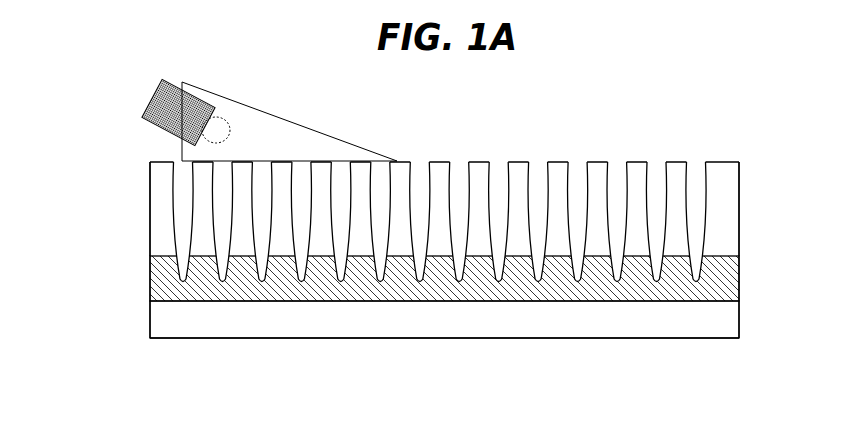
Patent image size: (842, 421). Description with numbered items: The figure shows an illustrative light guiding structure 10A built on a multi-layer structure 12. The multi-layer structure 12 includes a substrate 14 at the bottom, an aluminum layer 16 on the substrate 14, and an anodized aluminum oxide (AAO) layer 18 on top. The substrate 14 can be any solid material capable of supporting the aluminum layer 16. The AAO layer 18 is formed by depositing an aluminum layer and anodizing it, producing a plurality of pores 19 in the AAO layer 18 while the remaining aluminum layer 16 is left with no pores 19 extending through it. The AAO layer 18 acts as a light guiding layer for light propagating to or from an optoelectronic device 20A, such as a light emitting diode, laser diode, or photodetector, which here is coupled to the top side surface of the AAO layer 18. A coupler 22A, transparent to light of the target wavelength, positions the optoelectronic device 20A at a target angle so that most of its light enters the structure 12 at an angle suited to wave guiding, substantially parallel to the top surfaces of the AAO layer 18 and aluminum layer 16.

The light guiding structure 10A is at (679, 122).
The multi-layer structure 12 is at (437, 349).
The substrate 14 is at (140, 320).
The aluminum layer 16 is at (140, 278).
The anodized aluminum oxide (AAO) layer 18 is at (140, 206).
The pores 19 is at (539, 158).
The optoelectronic device 20A is at (158, 107).
The coupler 22A is at (256, 121).